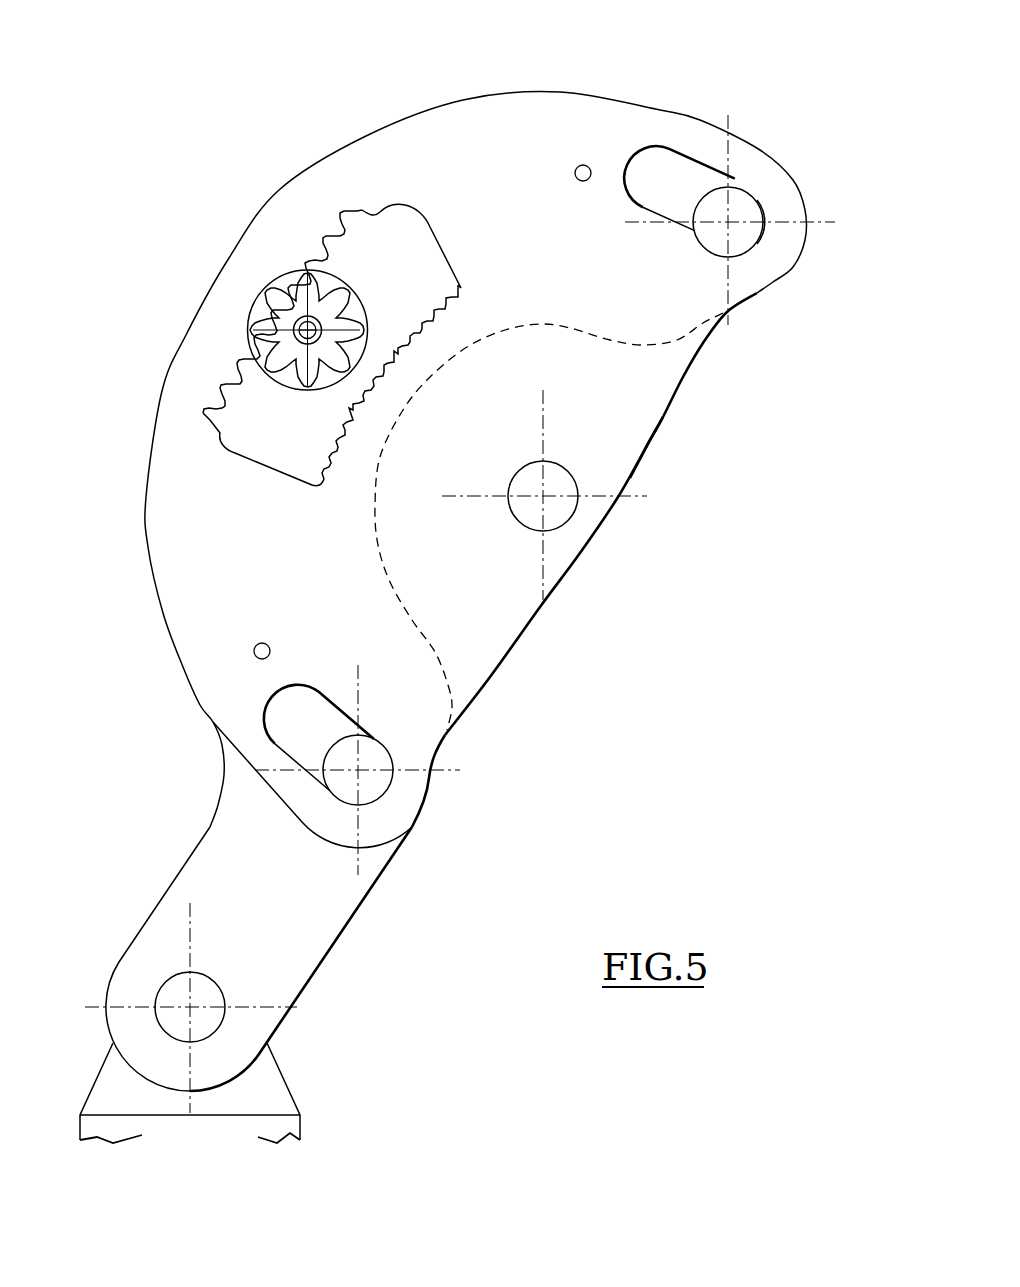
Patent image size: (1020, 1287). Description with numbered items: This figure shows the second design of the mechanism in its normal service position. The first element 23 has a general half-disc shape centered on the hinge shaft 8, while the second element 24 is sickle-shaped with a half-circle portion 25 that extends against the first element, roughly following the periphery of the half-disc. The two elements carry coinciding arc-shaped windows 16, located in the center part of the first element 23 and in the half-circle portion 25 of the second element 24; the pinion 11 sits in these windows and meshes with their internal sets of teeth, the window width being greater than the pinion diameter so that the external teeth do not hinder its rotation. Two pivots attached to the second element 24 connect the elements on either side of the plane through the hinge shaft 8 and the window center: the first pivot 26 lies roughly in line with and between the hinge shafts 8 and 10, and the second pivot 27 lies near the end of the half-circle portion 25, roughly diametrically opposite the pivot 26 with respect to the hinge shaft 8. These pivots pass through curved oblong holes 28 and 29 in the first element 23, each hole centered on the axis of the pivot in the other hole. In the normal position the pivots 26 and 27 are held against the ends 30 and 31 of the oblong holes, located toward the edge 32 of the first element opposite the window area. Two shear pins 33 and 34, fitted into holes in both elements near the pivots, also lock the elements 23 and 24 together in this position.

The hinge shaft 8 is at (558, 507).
The hinge shaft 10 is at (175, 992).
The pinion 11 is at (330, 302).
The window 16 is at (250, 400).
The first element 23 is at (505, 617).
The second element 24 is at (228, 840).
The half-circle portion 25 is at (477, 138).
The first pivot 26 is at (370, 783).
The second pivot 27 is at (738, 242).
The oblong hole 28 is at (268, 704).
The oblong hole 29 is at (690, 160).
The end of oblong hole 30 is at (393, 790).
The end of oblong hole 31 is at (760, 233).
The edge 32 is at (655, 440).
The shear pin 33 is at (586, 165).
The shear pin 34 is at (254, 647).